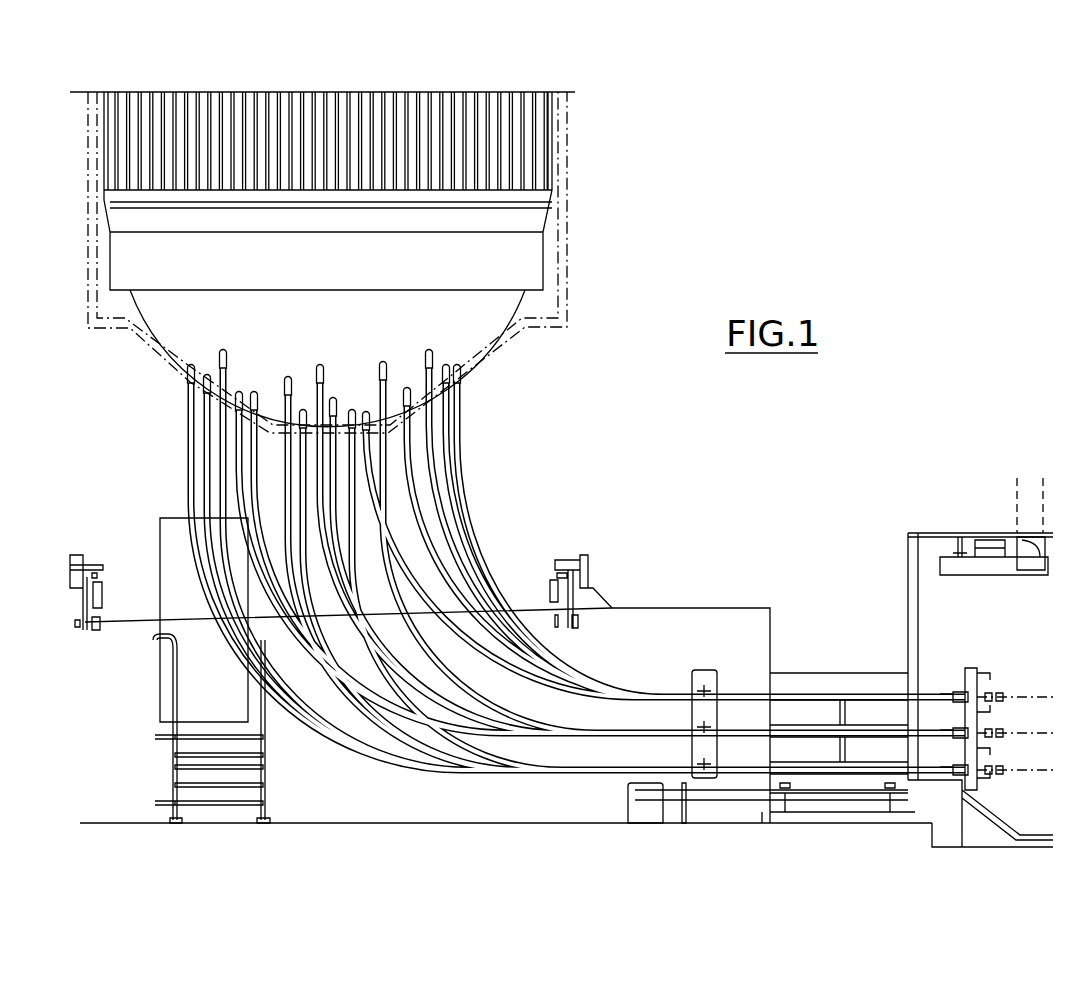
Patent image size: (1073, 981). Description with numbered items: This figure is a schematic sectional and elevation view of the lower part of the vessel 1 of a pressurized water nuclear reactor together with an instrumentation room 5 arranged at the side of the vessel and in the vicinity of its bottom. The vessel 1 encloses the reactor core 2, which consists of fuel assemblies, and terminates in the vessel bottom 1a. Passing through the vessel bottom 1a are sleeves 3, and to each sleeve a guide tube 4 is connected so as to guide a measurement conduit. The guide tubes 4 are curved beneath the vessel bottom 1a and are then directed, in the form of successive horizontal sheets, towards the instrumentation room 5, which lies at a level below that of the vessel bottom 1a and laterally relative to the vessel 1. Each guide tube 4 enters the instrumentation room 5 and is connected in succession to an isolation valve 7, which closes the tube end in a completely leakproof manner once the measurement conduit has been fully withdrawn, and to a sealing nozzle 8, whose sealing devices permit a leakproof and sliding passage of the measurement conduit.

The vessel 1 is at (552, 252).
The vessel bottom 1a is at (468, 342).
The reactor core 2 is at (550, 142).
The sleeves 3 is at (462, 380).
The guide tubes 4 is at (458, 470).
The instrumentation room 5 is at (952, 616).
The isolation valve 7 is at (958, 704).
The sealing nozzle 8 is at (1000, 690).